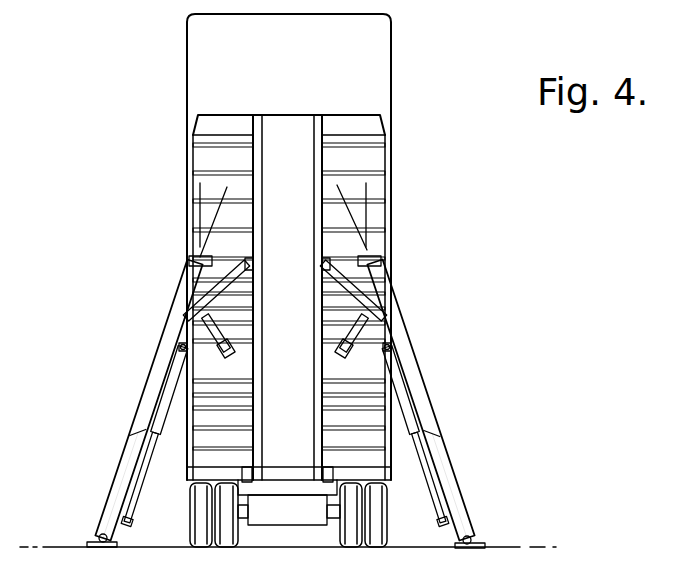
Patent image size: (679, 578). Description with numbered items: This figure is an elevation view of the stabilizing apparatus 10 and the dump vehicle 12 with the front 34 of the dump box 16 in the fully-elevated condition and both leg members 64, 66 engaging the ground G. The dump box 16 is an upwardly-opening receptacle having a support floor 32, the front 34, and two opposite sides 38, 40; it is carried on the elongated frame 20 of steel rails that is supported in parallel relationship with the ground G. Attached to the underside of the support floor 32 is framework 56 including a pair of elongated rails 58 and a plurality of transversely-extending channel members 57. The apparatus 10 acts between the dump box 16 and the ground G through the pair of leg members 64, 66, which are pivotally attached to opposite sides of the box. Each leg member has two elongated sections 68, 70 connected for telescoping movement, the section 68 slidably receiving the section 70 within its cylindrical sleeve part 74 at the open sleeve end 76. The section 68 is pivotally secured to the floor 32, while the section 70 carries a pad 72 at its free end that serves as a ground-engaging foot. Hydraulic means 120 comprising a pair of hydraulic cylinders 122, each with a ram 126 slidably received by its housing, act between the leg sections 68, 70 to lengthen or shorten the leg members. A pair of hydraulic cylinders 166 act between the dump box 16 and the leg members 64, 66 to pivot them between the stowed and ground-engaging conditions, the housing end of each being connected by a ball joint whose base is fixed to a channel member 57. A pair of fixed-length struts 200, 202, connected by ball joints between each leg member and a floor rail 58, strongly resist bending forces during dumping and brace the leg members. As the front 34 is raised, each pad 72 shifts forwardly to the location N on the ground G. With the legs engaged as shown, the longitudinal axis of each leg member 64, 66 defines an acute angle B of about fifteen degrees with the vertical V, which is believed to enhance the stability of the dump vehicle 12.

The stabilizing apparatus 10 is at (537, 272).
The dump vehicle 12 is at (140, 51).
The dump box 16 is at (178, 82).
The elongated frame 20 is at (287, 297).
The support floor 32 is at (230, 128).
The front 34 is at (305, 56).
The side 38 is at (391, 137).
The side 40 is at (188, 135).
The framework 56 is at (350, 130).
The channel members 57 is at (213, 151).
The elongated rails 58 is at (314, 181).
The leg member 64 is at (422, 402).
The leg member 66 is at (183, 401).
The leg section 68 is at (163, 368).
The leg section 70 is at (133, 450).
The pad 72 is at (97, 540).
The cylindrical sleeve part 74 is at (180, 305).
The sleeve end 76 is at (147, 433).
The hydraulic means 120 is at (157, 478).
The hydraulic cylinder 122 is at (172, 395).
The ram 126 is at (133, 478).
The hydraulic cylinder 166 is at (220, 328).
The strut 200 is at (363, 297).
The strut 202 is at (245, 290).
The vertical V is at (198, 185).
The acute angle B is at (200, 214).
The ground G is at (50, 547).
The location N is at (113, 548).